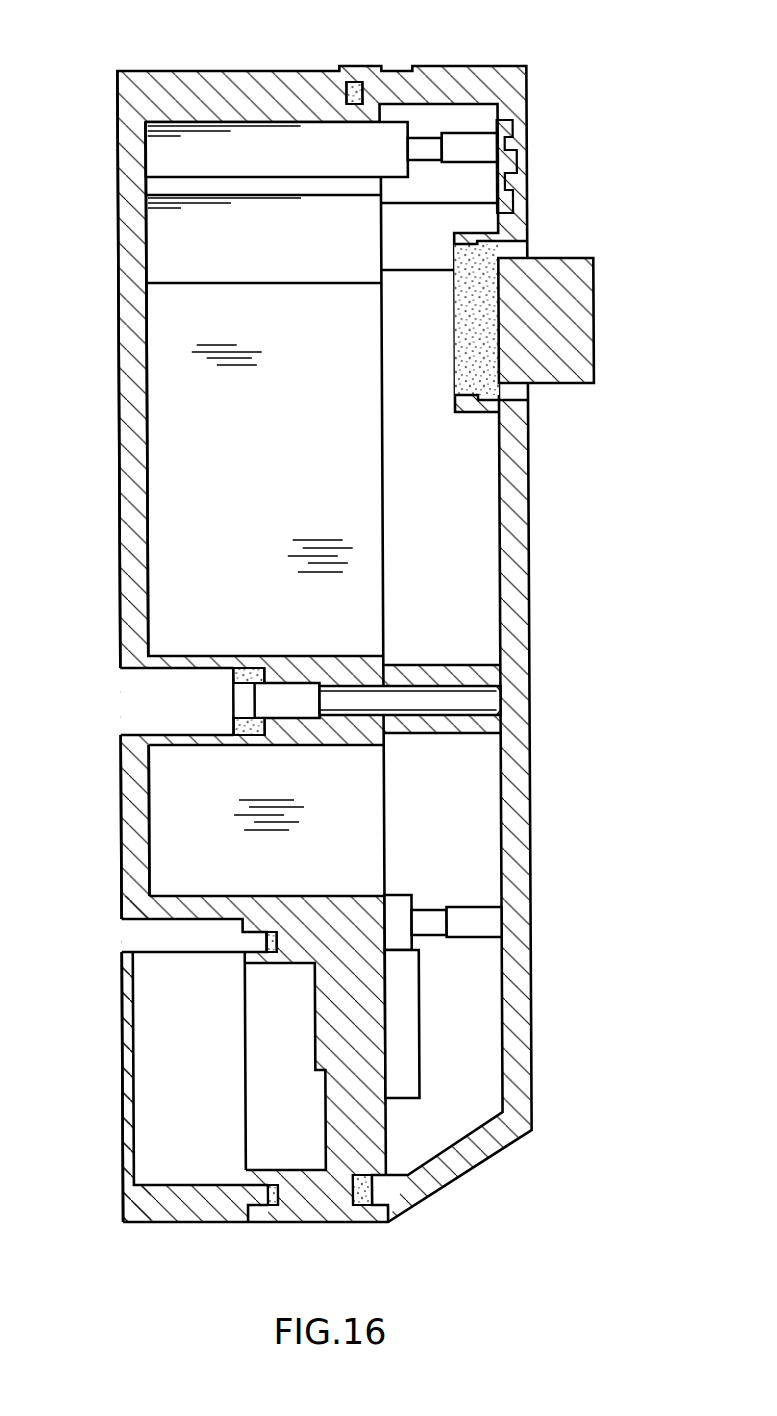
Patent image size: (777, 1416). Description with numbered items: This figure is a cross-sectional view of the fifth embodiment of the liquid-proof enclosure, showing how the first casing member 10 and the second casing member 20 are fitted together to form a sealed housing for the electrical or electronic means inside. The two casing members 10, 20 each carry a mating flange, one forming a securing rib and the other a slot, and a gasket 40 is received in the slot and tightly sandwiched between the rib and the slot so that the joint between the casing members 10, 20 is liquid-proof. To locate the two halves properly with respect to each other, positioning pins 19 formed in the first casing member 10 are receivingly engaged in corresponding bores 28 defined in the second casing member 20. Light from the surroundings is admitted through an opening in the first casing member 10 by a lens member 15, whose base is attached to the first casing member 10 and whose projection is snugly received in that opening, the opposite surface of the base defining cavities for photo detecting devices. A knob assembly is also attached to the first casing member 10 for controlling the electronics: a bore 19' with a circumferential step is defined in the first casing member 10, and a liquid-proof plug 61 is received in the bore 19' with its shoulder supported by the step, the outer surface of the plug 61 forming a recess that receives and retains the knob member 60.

The first casing member 10 is at (509, 513).
The lens member 15 is at (511, 168).
The positioning pins 19 is at (544, 496).
The bore 19' is at (552, 309).
The second casing member 20 is at (136, 465).
The bores 28 is at (396, 898).
The gasket 40 is at (262, 1188).
The knob member 60 is at (571, 305).
The liquid-proof plug 61 is at (515, 393).